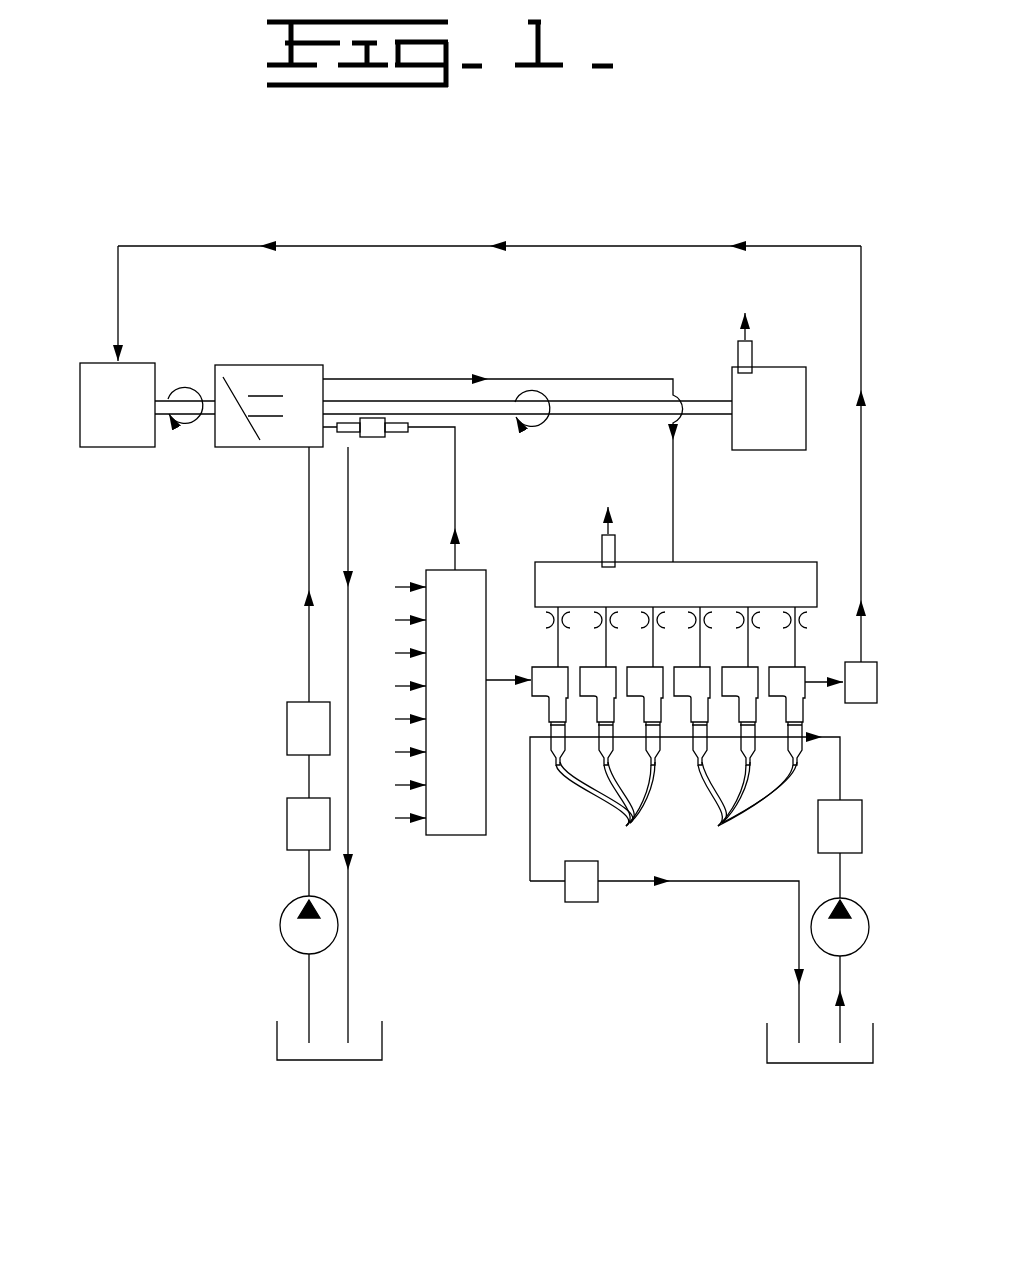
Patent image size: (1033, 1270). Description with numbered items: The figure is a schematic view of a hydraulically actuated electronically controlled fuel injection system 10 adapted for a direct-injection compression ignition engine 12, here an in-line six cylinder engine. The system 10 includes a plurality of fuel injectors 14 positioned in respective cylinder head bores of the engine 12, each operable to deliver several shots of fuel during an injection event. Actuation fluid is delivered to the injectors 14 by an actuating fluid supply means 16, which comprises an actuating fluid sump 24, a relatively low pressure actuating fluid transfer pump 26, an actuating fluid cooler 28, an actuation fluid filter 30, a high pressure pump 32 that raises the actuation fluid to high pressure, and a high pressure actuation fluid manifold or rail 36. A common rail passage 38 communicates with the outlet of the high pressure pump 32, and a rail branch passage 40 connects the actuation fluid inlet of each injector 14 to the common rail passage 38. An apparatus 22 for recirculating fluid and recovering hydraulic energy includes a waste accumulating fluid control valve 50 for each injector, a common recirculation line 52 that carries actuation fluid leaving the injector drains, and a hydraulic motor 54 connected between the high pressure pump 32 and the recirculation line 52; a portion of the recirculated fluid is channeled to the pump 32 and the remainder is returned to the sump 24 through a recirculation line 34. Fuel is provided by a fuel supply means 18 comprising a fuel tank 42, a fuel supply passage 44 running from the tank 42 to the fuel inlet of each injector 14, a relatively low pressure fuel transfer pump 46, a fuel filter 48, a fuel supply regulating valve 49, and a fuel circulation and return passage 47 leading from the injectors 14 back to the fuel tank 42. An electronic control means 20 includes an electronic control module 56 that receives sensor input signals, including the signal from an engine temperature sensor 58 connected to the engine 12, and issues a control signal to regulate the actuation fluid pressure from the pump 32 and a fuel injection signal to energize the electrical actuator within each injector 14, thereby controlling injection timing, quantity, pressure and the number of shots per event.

The hydraulically actuated electronically controlled fuel injection system 10 is at (650, 196).
The direct-injection compression ignition engine 12 is at (756, 420).
The fuel injector 14 is at (676, 800).
The actuating fluid supply means 16 is at (340, 1086).
The fuel supply means 18 is at (820, 1078).
The electronic control means 20 is at (454, 840).
The apparatus for recirculating fluid and recovering hydraulic energy 22 is at (94, 226).
The actuating fluid sump 24 is at (382, 1036).
The actuating fluid transfer pump 26 is at (288, 926).
The actuating fluid cooler 28 is at (291, 818).
The actuation fluid filter 30 is at (291, 741).
The high pressure pump 32 is at (260, 447).
The recirculation line 34 is at (350, 922).
The high pressure actuation fluid manifold or rail 36 is at (723, 558).
The common rail passage 38 is at (579, 562).
The rail branch passage 40 is at (797, 647).
The fuel tank 42 is at (767, 1050).
The fuel supply passage 44 is at (840, 762).
The fuel transfer pump 46 is at (867, 908).
The fuel circulation and return passage 47 is at (799, 901).
The fuel filter 48 is at (827, 838).
The fuel supply regulating valve 49 is at (570, 893).
The waste accumulating fluid control valve 50 is at (849, 695).
The common recirculation line 52 is at (349, 246).
The hydraulic motor 54 is at (105, 418).
The electronic control module (ECM) 56 is at (444, 710).
The engine temperature sensor 58 is at (752, 345).